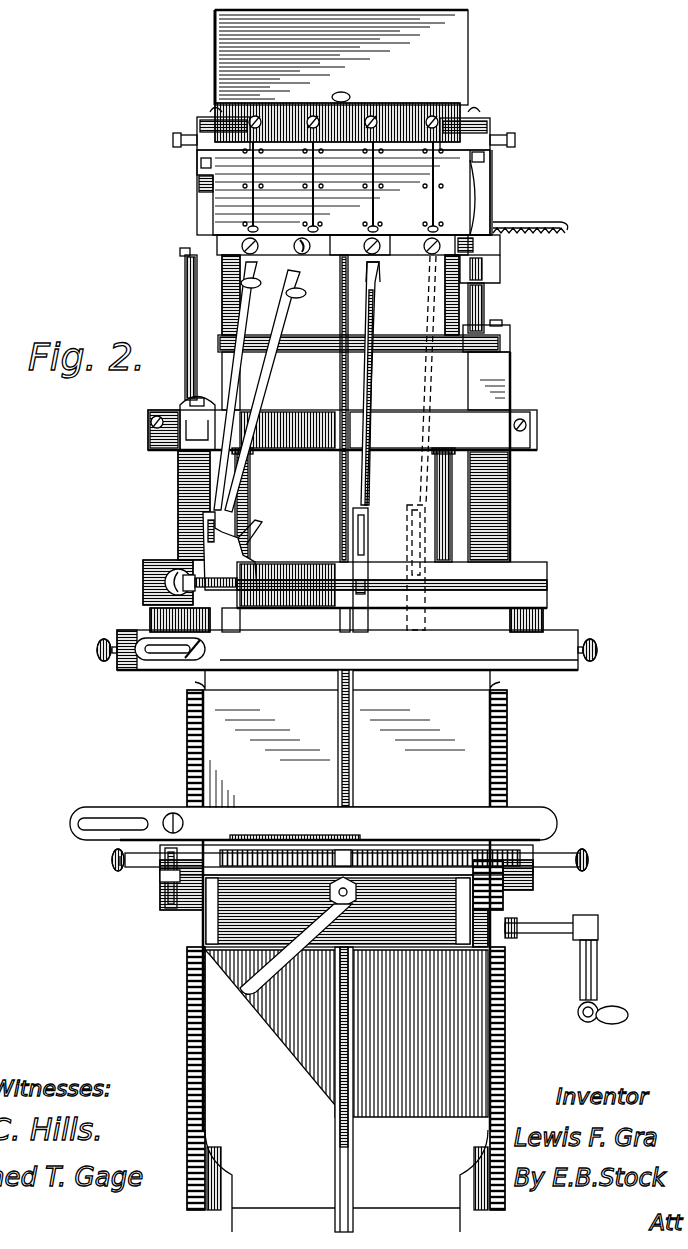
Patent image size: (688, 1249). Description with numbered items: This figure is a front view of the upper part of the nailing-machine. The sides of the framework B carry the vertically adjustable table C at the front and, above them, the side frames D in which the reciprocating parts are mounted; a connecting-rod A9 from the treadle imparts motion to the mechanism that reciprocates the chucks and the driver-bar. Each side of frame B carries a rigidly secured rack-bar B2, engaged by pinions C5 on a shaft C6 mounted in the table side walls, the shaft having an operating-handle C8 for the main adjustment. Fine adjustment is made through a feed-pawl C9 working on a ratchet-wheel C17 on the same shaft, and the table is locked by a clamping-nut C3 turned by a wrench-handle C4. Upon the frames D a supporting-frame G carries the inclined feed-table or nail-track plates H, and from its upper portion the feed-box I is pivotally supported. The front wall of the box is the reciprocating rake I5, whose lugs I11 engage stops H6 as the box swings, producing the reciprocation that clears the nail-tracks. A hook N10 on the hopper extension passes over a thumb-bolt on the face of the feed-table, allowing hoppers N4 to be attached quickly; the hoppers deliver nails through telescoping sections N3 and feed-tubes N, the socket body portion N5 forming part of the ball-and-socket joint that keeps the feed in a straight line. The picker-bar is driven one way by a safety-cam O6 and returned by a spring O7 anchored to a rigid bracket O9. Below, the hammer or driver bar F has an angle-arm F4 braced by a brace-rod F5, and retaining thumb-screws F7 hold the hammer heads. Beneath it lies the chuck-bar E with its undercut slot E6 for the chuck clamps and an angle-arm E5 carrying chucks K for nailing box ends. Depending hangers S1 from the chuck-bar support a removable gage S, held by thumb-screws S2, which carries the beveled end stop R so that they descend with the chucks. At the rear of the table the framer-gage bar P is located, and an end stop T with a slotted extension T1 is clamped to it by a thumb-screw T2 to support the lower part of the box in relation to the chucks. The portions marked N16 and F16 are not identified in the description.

The feed-box I is at (468, 72).
The rake or track-cover I5 is at (358, 120).
The lugs I11 is at (478, 126).
The inclined feed-table or nail-track plates H is at (457, 180).
The stops H6 is at (200, 137).
The hook N10 is at (300, 243).
The rod bar N16 is at (340, 236).
The rigid bracket O9 is at (522, 222).
The spring O7 is at (500, 245).
The safety-cam O6 is at (492, 278).
The brace-rod F5 is at (186, 305).
The supporting-frame G is at (503, 342).
The side frames D is at (503, 524).
The hammer or driver bar F is at (358, 424).
The bar portion F16 is at (440, 430).
The retaining thumb-screw F7 is at (150, 425).
The angle-arm F4 is at (188, 448).
The body portion of socket N5 is at (258, 296).
The feed-tubes N is at (252, 398).
The telescoping sections N3 is at (376, 296).
The hoppers N4 is at (381, 268).
The chuck K is at (206, 556).
The chuck-bar E is at (548, 600).
The longitudinal undercut slot E6 is at (534, 570).
The angle-arm E5 is at (155, 562).
The hangers S1 is at (152, 622).
The removable gage S is at (347, 650).
The thumb-screws S2 is at (343, 646).
The beveled end stop R is at (158, 660).
The framework sides B is at (347, 951).
The connecting-rod A9 is at (336, 756).
The rack-bar B2 is at (507, 724).
The end stop T is at (313, 800).
The main gage-bar P is at (460, 823).
The slotted extension T1 is at (138, 818).
The thumb-screw T2 is at (173, 812).
The table C is at (556, 848).
The pinions C5 is at (178, 903).
The ratchet-wheel C17 is at (200, 938).
The feed-pawl C9 is at (165, 878).
The clamping-nut C3 is at (346, 888).
The wrench-handle C4 is at (248, 994).
The shaft C6 is at (506, 958).
The operating-handle C8 is at (598, 972).